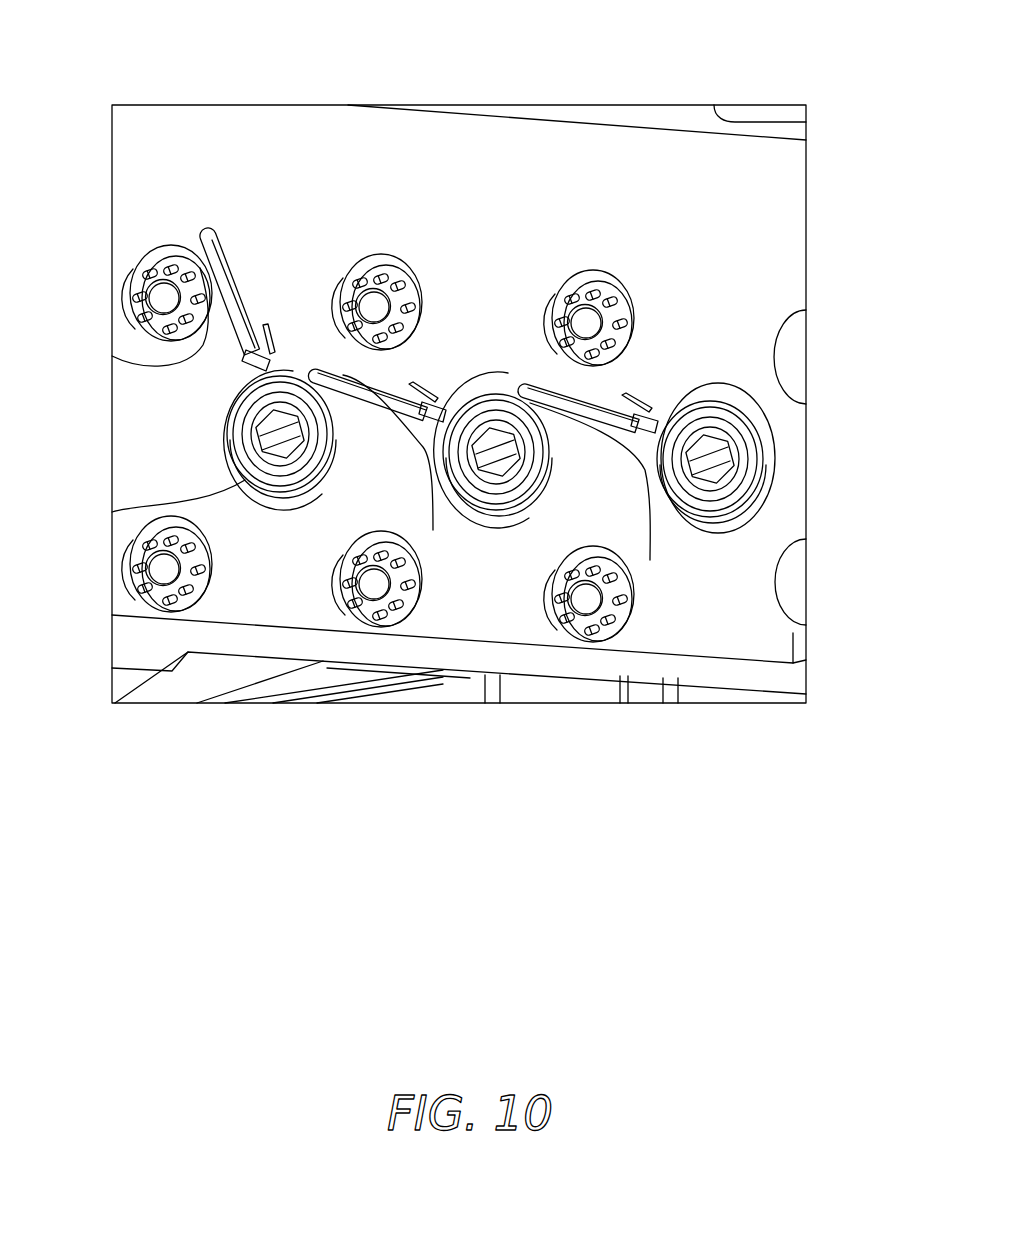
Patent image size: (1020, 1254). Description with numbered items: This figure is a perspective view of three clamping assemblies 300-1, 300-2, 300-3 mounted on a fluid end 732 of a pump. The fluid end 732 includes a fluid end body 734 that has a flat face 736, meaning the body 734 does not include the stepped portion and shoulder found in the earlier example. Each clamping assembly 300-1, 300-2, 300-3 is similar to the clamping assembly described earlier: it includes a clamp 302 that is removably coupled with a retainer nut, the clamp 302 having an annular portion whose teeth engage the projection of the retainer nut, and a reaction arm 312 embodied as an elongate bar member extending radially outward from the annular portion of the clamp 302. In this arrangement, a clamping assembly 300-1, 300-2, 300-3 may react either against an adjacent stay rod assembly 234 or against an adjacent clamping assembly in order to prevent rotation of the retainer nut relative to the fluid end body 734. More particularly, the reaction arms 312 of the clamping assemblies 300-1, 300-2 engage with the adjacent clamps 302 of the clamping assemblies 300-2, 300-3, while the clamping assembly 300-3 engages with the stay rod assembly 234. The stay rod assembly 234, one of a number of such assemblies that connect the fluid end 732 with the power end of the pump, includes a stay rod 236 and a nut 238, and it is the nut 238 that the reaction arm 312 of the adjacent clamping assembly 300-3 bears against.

The stay rod assembly 234 is at (133, 275).
The stay rod 236 is at (200, 355).
The nut 238 is at (193, 270).
The reaction arm 312 is at (222, 272).
The clamp 302 is at (250, 477).
The clamping assembly 300-1 is at (624, 461).
The clamping assembly 300-2 is at (410, 453).
The clamping assembly 300-3 is at (220, 443).
The fluid end 732 is at (822, 436).
The fluid end body 734 is at (797, 130).
The flat face 736 is at (767, 287).